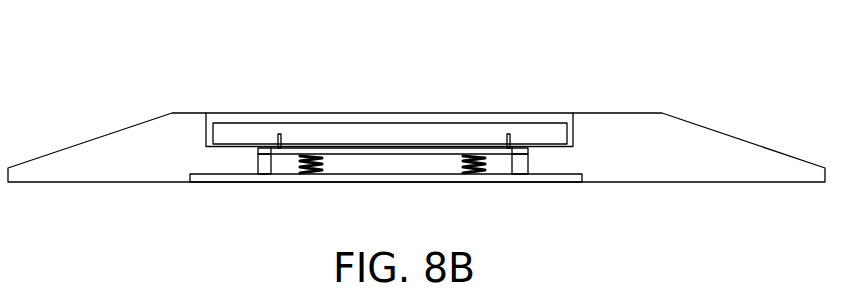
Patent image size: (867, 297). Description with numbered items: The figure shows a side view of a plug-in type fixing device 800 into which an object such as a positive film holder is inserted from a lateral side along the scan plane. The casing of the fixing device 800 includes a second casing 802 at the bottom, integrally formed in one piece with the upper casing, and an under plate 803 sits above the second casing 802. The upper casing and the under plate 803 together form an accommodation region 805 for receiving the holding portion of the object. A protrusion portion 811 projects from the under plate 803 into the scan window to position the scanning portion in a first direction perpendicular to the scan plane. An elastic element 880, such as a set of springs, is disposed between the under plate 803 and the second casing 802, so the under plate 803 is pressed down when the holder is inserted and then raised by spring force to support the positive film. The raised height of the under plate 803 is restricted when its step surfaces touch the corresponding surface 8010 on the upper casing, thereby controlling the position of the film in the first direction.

The fixing device 800 is at (58, 37).
The second casing 802 is at (562, 178).
The under plate 803 is at (383, 150).
The accommodation region 805 is at (545, 124).
The protrusion portion 811 is at (278, 136).
The corresponding surface 8010 is at (527, 151).
The elastic element 880 is at (322, 166).